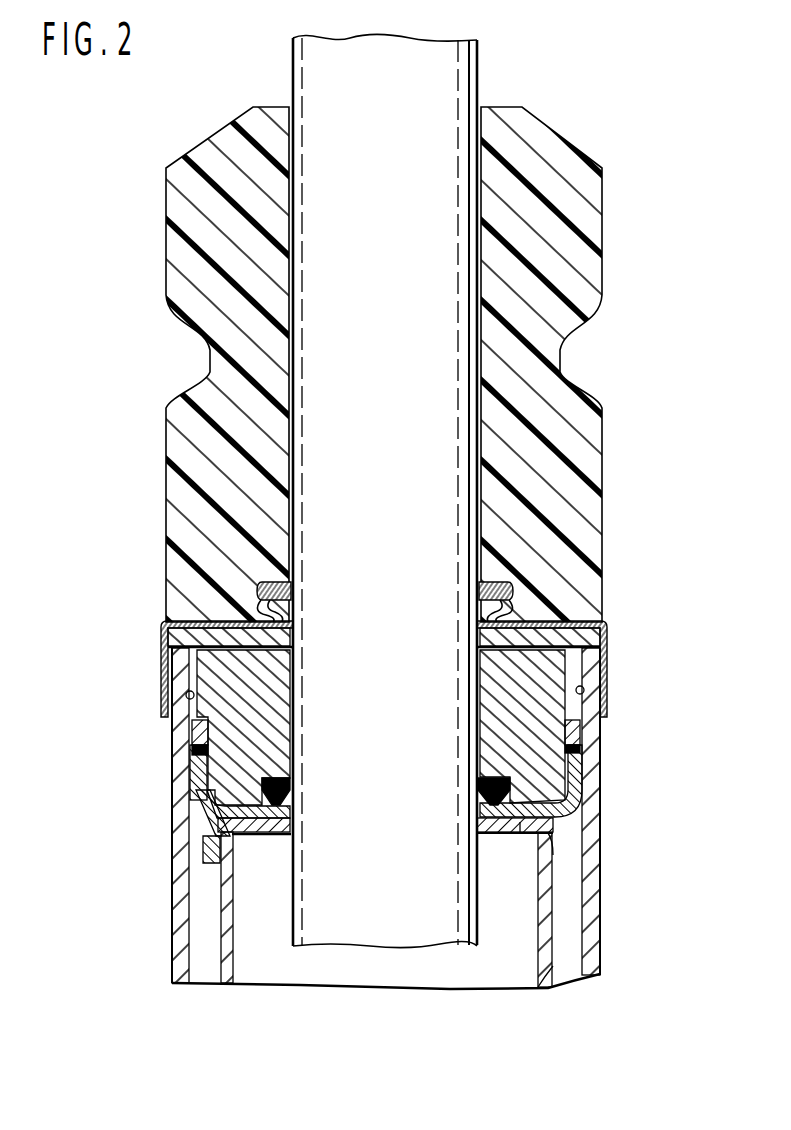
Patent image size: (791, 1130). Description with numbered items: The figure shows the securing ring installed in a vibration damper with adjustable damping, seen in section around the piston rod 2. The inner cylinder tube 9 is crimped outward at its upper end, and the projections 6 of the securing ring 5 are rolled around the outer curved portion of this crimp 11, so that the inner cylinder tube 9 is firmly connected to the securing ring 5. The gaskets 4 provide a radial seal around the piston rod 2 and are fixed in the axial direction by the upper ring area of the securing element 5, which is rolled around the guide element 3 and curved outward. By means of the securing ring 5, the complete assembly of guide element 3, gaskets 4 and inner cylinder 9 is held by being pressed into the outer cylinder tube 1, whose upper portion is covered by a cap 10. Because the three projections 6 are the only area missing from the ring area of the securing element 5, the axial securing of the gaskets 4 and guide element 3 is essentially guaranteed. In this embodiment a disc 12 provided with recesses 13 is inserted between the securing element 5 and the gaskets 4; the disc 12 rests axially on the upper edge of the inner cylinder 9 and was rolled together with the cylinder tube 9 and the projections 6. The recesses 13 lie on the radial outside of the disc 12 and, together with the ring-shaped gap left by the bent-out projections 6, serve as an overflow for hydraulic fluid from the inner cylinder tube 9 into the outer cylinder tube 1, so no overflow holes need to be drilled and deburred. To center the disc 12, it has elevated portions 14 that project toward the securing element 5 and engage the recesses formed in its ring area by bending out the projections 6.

The outer cylinder tube 1 is at (588, 865).
The piston rod 2 is at (447, 87).
The guide element 3 is at (557, 682).
The gaskets 4 is at (260, 790).
The securing ring 5 is at (582, 768).
The projections 6 is at (200, 810).
The inner cylinder tube 9 is at (550, 966).
The cap 10 is at (605, 635).
The crimp 11 is at (222, 842).
The disc 12 is at (272, 832).
The recesses 13 is at (522, 822).
The elevated portions 14 is at (200, 803).